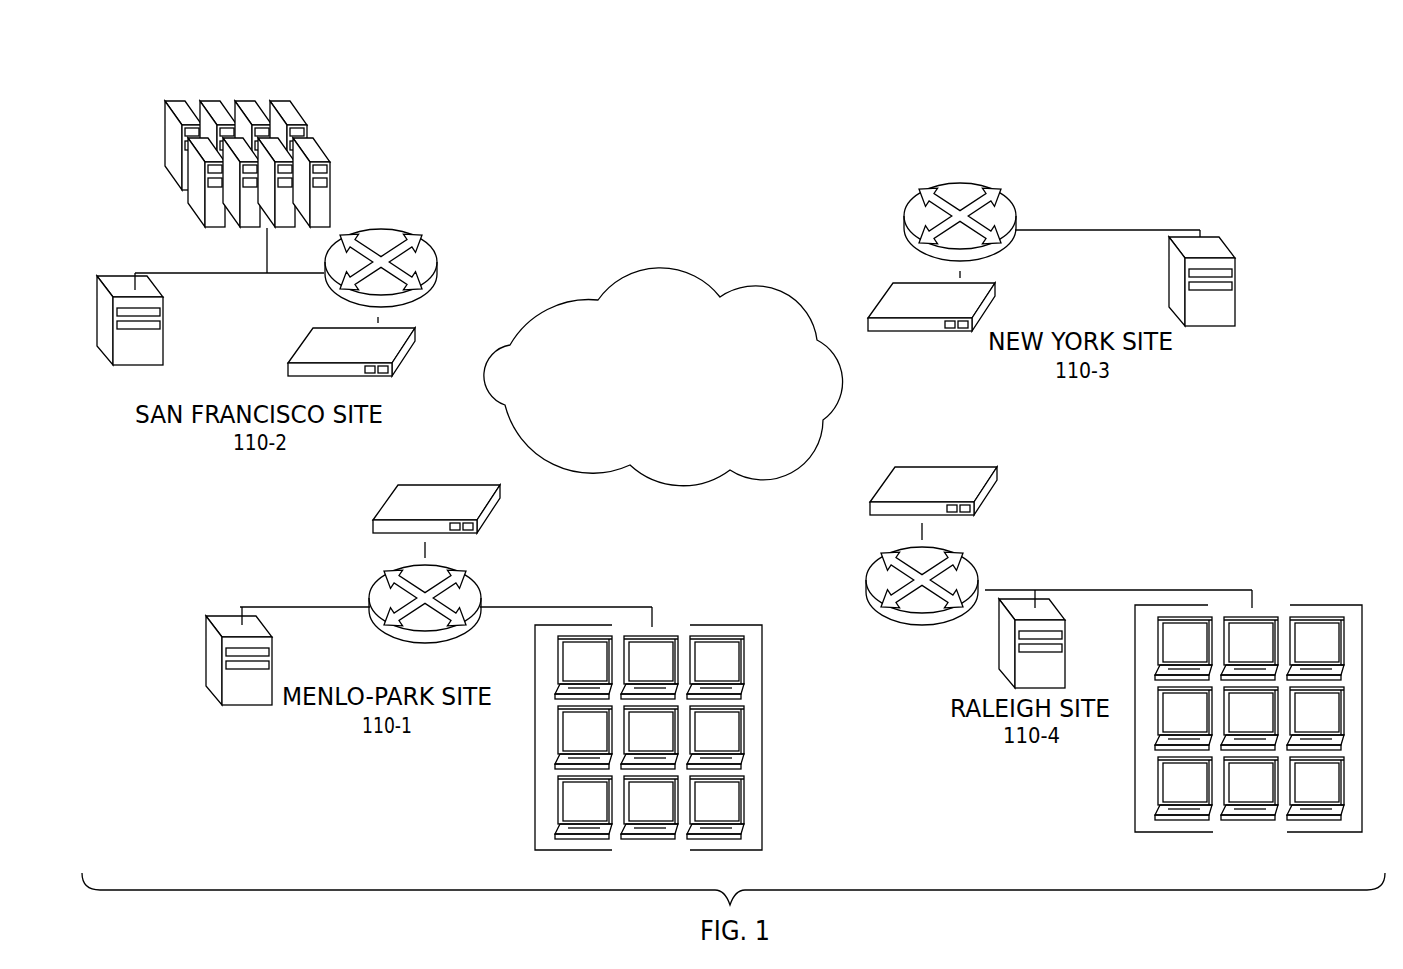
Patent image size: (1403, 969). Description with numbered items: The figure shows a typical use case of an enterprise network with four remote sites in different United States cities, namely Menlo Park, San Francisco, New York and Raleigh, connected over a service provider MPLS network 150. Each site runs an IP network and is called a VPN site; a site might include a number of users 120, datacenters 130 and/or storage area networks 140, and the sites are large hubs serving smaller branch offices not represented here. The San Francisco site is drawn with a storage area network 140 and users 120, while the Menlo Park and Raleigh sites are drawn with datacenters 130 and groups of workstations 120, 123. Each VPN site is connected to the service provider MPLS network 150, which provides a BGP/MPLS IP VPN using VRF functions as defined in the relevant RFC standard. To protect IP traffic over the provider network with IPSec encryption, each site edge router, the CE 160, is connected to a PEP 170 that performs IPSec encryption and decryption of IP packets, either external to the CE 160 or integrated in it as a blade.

The users 120 is at (166, 340).
The group of workstations 123 is at (1248, 727).
The datacenter 130 is at (1237, 300).
The storage area network 140 is at (323, 150).
The service provider MPLS network 150 is at (683, 442).
The CE 160 is at (380, 231).
The PEP 170 is at (310, 333).